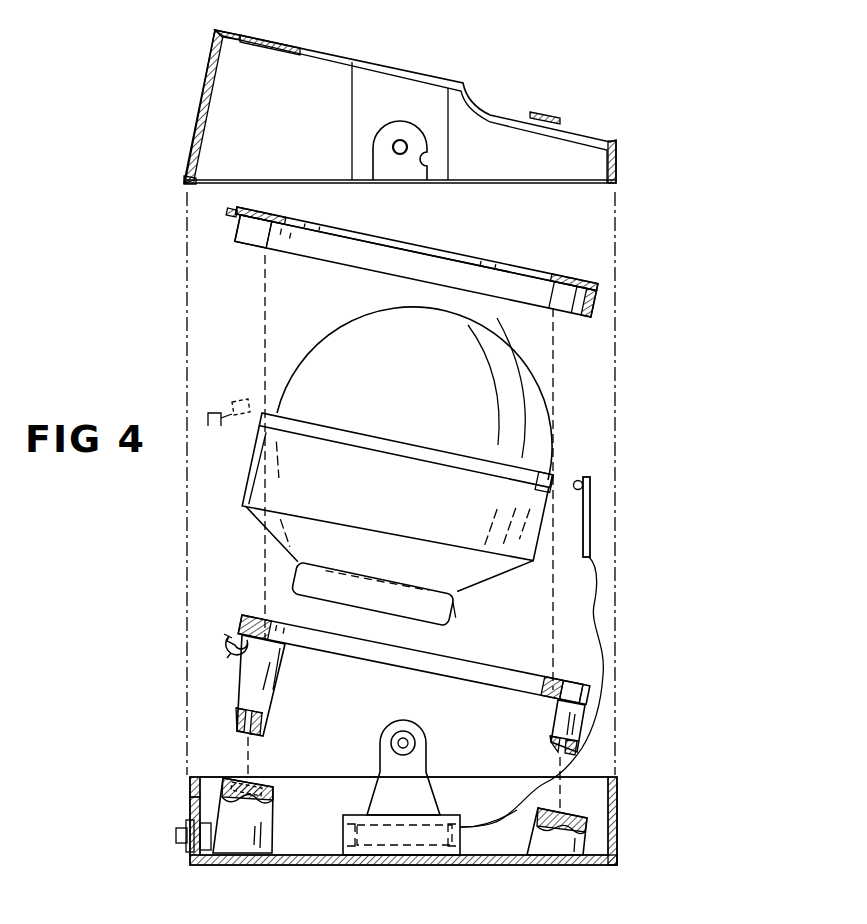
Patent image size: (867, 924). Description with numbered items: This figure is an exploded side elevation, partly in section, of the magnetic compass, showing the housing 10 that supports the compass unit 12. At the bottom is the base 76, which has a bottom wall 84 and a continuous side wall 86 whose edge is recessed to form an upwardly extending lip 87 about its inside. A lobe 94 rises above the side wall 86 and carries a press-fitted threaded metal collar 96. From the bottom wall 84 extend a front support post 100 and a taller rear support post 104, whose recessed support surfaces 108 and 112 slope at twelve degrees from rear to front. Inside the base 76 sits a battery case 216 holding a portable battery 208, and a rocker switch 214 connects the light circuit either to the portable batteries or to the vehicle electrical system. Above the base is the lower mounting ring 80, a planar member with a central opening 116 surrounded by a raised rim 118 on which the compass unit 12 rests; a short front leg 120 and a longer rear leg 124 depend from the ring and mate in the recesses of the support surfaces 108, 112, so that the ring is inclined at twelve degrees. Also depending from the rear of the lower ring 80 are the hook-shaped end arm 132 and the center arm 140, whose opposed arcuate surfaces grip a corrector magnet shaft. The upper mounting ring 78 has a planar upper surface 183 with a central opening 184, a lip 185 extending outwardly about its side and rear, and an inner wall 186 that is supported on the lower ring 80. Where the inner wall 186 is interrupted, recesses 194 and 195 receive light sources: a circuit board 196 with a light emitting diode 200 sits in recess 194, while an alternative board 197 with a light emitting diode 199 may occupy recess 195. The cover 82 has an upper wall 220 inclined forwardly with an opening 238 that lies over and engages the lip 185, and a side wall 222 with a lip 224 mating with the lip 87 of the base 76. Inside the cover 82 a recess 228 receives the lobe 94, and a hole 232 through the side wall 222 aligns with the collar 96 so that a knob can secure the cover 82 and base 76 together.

The housing 10 is at (689, 241).
The compass unit 12 is at (541, 389).
The base 76 is at (190, 810).
The upper mounting ring 78 is at (417, 257).
The lower mounting ring 80 is at (422, 655).
The cover 82 is at (396, 94).
The bottom wall 84 is at (306, 866).
The side wall 86 is at (401, 807).
The lip 87 is at (191, 779).
The lobe 94 is at (430, 761).
The threaded metal collar 96 is at (407, 741).
The support post 100 is at (531, 833).
The support post 104 is at (275, 802).
The support surface 108 is at (565, 814).
The support surface 112 is at (258, 788).
The central opening 116 is at (536, 687).
The raised rim 118 is at (558, 678).
The leg 120 is at (554, 725).
The leg 124 is at (273, 695).
The end arm 132 is at (235, 651).
The center arm 140 is at (244, 622).
The upper surface 183 is at (495, 260).
The central opening 184 is at (283, 218).
The lip 185 is at (246, 213).
The inner wall 186 is at (290, 244).
The recess 194 is at (565, 302).
The recess 195 is at (255, 233).
The circuit board 196 is at (591, 509).
The board 197 is at (226, 428).
The light emitting diode 199 is at (240, 404).
The light emitting diode 200 is at (577, 481).
The battery 208 is at (415, 846).
The rocker switch 214 is at (178, 838).
The battery case 216 is at (422, 815).
The upper wall 220 is at (226, 32).
The side wall 222 is at (206, 96).
The lip 224 is at (185, 187).
The recess 228 is at (436, 161).
The hole 232 is at (402, 145).
The opening 238 is at (238, 36).